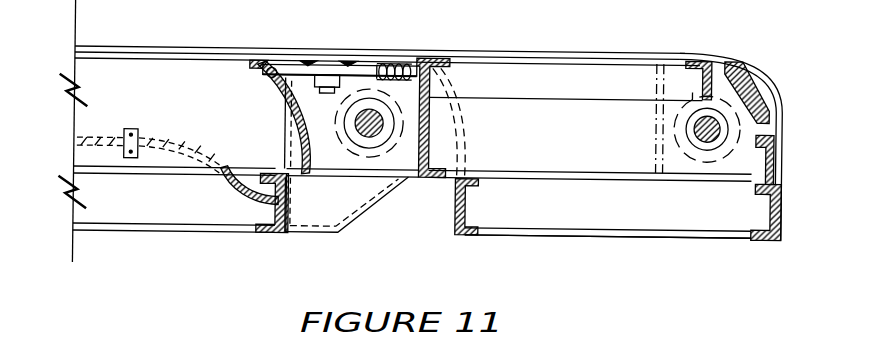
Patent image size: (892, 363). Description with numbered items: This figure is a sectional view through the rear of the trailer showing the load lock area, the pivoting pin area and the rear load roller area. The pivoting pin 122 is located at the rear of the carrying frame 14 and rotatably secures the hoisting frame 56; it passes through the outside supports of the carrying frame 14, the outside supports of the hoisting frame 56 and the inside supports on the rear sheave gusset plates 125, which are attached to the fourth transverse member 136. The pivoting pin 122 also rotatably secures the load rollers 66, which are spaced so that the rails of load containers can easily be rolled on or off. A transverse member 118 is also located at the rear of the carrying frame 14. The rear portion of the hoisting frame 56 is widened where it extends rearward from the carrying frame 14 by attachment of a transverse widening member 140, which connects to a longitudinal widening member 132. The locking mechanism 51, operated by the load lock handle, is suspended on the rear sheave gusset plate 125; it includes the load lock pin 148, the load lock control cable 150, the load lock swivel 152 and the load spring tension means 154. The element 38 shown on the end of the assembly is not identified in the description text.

The carrying frame 14 is at (113, 208).
The end cap 38 is at (783, 198).
The locking mechanism 51 is at (301, 25).
The hoisting frame 56 is at (107, 110).
The load rollers 66 is at (693, 86).
The transverse member 118 is at (277, 212).
The pivoting pin 122 is at (366, 137).
The rear sheave gusset plates 125 is at (362, 61).
The longitudinal widening members 132 is at (615, 203).
The fourth transverse member 136 is at (443, 175).
The transverse widening member 140 is at (458, 223).
The load lock pin 148 is at (258, 60).
The load lock control cable 150 is at (240, 190).
The load lock swivel 152 is at (291, 74).
The load spring tension means 154 is at (416, 62).